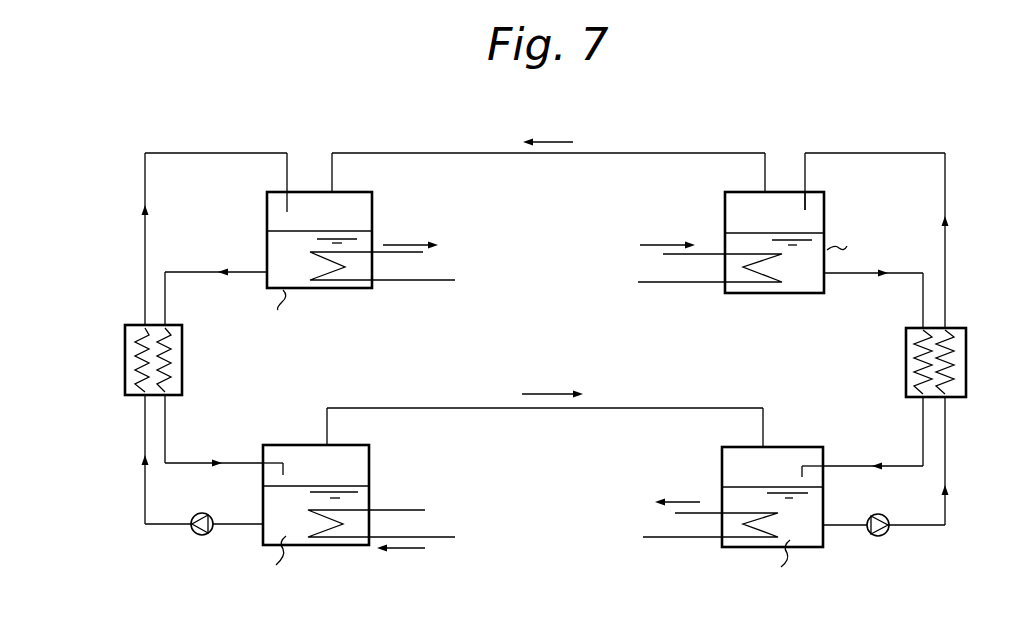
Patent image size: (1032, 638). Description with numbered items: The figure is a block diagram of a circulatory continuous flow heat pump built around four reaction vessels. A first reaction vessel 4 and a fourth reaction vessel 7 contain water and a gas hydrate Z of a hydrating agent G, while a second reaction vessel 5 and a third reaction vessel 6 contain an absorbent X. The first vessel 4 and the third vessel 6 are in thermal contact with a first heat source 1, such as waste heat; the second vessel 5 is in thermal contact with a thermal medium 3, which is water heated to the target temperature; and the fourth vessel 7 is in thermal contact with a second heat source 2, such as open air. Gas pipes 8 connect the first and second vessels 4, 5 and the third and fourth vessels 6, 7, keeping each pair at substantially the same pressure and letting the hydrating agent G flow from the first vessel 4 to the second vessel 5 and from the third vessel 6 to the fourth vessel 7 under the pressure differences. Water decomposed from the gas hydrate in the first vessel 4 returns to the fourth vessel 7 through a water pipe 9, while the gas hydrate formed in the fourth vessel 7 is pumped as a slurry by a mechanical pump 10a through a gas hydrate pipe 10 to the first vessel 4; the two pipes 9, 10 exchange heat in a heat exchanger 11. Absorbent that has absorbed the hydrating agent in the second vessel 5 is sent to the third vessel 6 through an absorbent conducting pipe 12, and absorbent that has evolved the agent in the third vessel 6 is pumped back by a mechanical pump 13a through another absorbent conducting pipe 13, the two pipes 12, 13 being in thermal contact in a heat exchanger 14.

The first heat source 1 is at (677, 283).
The second heat source 2 is at (672, 540).
The thermal medium 3 is at (415, 281).
The first reaction vessel 4 is at (826, 204).
The second reaction vessel 5 is at (380, 172).
The third reaction vessel 6 is at (347, 548).
The fourth reaction vessel 7 is at (818, 549).
The gas pipe 8 is at (650, 152).
The water pipe 9 is at (921, 432).
The gas hydrate pipe 10 is at (948, 277).
The mechanical pump 10a is at (884, 536).
The heat exchanger 11 is at (967, 366).
The absorbent conducting pipe 12 is at (185, 462).
The absorbent conducting pipe 13 is at (140, 528).
The mechanical pump 13a is at (201, 536).
The heat exchanger 14 is at (125, 357).